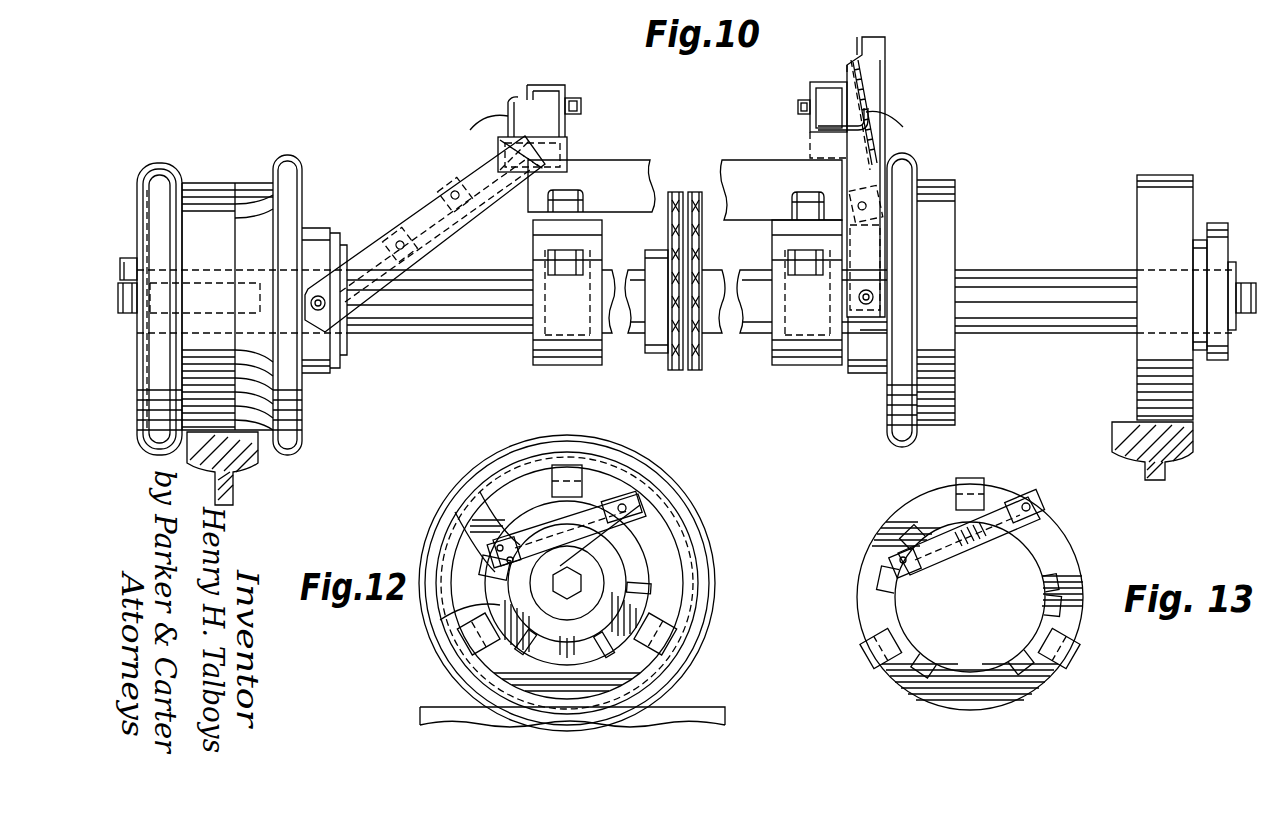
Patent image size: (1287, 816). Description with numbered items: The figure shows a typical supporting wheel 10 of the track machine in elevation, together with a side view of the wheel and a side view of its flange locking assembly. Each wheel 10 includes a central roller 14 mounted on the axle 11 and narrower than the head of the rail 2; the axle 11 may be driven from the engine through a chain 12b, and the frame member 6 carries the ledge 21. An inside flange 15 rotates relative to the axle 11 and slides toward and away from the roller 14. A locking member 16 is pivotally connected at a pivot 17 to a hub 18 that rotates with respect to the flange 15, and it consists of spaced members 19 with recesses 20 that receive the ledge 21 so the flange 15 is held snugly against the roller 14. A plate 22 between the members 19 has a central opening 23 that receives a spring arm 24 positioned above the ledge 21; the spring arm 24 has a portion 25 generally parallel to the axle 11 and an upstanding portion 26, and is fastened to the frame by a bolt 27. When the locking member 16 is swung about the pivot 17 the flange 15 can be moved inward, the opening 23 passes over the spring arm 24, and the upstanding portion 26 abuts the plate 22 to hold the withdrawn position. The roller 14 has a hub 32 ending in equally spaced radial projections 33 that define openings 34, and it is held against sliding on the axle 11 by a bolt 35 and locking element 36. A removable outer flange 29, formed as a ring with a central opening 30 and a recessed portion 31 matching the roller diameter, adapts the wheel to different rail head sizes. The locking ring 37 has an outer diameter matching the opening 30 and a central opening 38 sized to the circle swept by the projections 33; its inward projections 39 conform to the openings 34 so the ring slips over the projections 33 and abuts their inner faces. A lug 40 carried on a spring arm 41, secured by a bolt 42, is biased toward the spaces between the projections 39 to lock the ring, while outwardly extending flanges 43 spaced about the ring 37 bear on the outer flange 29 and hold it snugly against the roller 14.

In FIG. 10, the rail 2 is at (232, 485).
In FIG. 12, the rail 2 is at (700, 707).
In FIG. 10, the frame member 6 is at (650, 178).
In FIG. 10, the supporting wheel 10 is at (665, 283).
In FIG. 12, the supporting wheel 10 is at (668, 470).
In FIG. 10, the axle 11 is at (1266, 118).
In FIG. 10, the chain 12b is at (695, 370).
In FIG. 10, the central roller 14 is at (210, 183).
In FIG. 10, the inside flange 15 is at (294, 158).
In FIG. 10, the locking member 16 is at (474, 212).
In FIG. 10, the pivot 17 is at (326, 310).
In FIG. 12, the pivot 17 is at (545, 738).
In FIG. 10, the hub 18 is at (330, 380).
In FIG. 10, the spaced members 19 is at (448, 225).
In FIG. 10, the recesses 20 is at (498, 146).
In FIG. 10, the ledge 21 is at (567, 153).
In FIG. 10, the plate 22 is at (400, 233).
In FIG. 10, the central opening 23 is at (455, 183).
In FIG. 10, the spring arm 24 is at (471, 128).
In FIG. 10, the portion 25 is at (513, 130).
In FIG. 10, the upstanding portion 26 is at (520, 98).
In FIG. 10, the bolt 27 is at (585, 104).
In FIG. 10, the removable outer flange 29 is at (175, 165).
In FIG. 12, the central opening 30 is at (480, 495).
In FIG. 12, the recessed portion 31 is at (456, 512).
In FIG. 10, the hub 32 is at (1200, 240).
In FIG. 12, the hub 32 is at (650, 545).
In FIG. 10, the projections 33 is at (1218, 225).
In FIG. 12, the projections 33 is at (548, 522).
In FIG. 12, the openings 34 is at (640, 575).
In FIG. 10, the bolt 35 is at (128, 316).
In FIG. 12, the bolt 35 is at (560, 595).
In FIG. 10, the locking element 36 is at (1236, 265).
In FIG. 12, the locking element 36 is at (587, 563).
In FIG. 12, the locking ring 37 is at (662, 610).
In FIG. 13, the locking ring 37 is at (1060, 548).
In FIG. 13, the central opening 38 is at (1030, 585).
In FIG. 13, the projections 39 is at (945, 530).
In FIG. 12, the lug 40 is at (485, 563).
In FIG. 13, the lug 40 is at (910, 585).
In FIG. 10, the spring arm 41 is at (140, 272).
In FIG. 12, the spring arm 41 is at (590, 515).
In FIG. 13, the spring arm 41 is at (975, 550).
In FIG. 13, the bolt 42 is at (1030, 503).
In FIG. 12, the outwardly extending flanges 43 is at (568, 468).
In FIG. 13, the outwardly extending flanges 43 is at (970, 478).